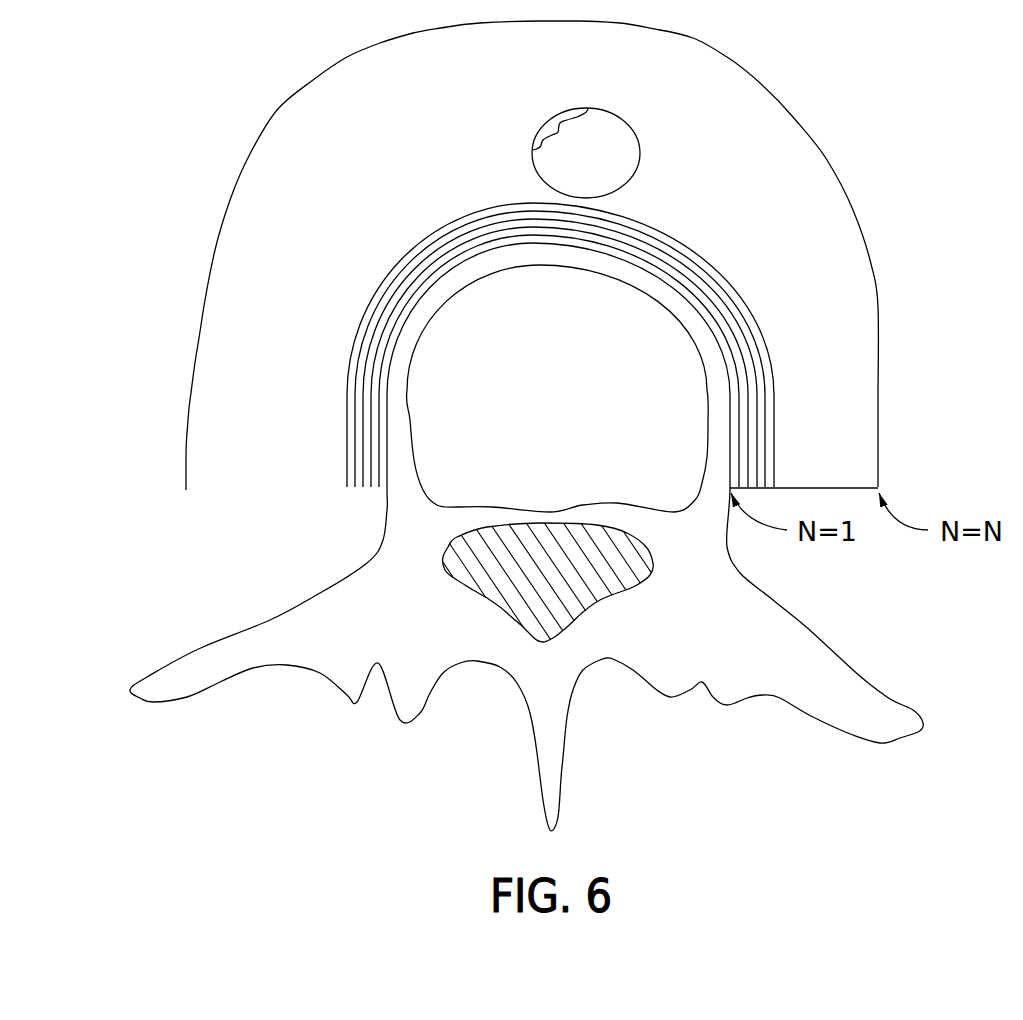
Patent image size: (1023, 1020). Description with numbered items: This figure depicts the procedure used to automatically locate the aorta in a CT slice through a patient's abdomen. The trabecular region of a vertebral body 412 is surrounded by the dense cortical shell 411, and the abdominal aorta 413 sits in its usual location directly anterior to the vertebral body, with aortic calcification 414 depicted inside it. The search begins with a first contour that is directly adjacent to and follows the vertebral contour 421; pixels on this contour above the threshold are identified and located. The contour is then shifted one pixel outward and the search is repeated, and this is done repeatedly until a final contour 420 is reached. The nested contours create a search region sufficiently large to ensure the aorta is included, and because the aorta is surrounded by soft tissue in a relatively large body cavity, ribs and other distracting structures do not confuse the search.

The dense cortical shell 411 is at (266, 636).
The vertebral body 412 is at (439, 466).
The abdominal aorta 413 is at (603, 136).
The aortic calcification 414 is at (554, 124).
The final contour 420 is at (880, 277).
The vertebral contour 421 is at (733, 382).